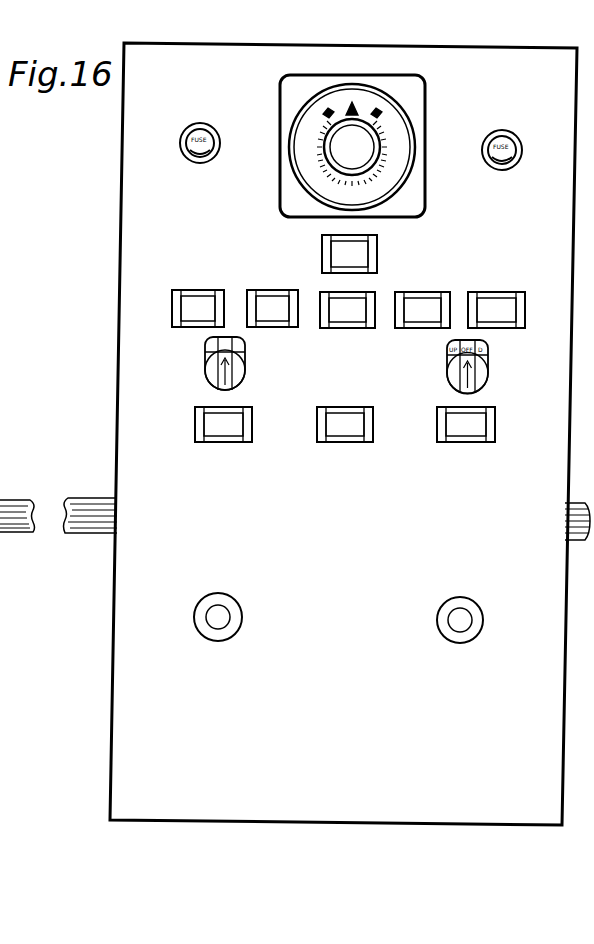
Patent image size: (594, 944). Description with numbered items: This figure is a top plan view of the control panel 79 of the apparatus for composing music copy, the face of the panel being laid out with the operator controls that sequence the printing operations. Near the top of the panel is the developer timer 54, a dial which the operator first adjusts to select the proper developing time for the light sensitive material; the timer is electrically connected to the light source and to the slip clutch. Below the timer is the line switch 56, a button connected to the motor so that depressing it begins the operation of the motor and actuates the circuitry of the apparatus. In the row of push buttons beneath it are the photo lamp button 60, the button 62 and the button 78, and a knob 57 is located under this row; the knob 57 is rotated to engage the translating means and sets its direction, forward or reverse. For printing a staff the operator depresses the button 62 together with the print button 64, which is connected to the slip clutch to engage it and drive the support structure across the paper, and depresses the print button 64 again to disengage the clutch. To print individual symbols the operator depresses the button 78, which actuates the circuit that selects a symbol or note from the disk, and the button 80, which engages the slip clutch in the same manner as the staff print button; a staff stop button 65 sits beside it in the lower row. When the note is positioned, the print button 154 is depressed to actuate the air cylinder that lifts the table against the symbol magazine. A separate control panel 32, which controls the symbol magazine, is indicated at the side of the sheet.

The control panel 79 is at (128, 748).
The developer timer 54 is at (415, 203).
The line switch 56 is at (373, 255).
The photo lamp button 60 is at (192, 327).
The button 62 is at (267, 321).
The button 78 is at (345, 318).
The knob 57 is at (241, 375).
The button 80 is at (238, 432).
The staff stop button 65 is at (351, 435).
The control panel 32 is at (0, 637).
The print button 154 is at (222, 622).
The print button 64 is at (465, 626).